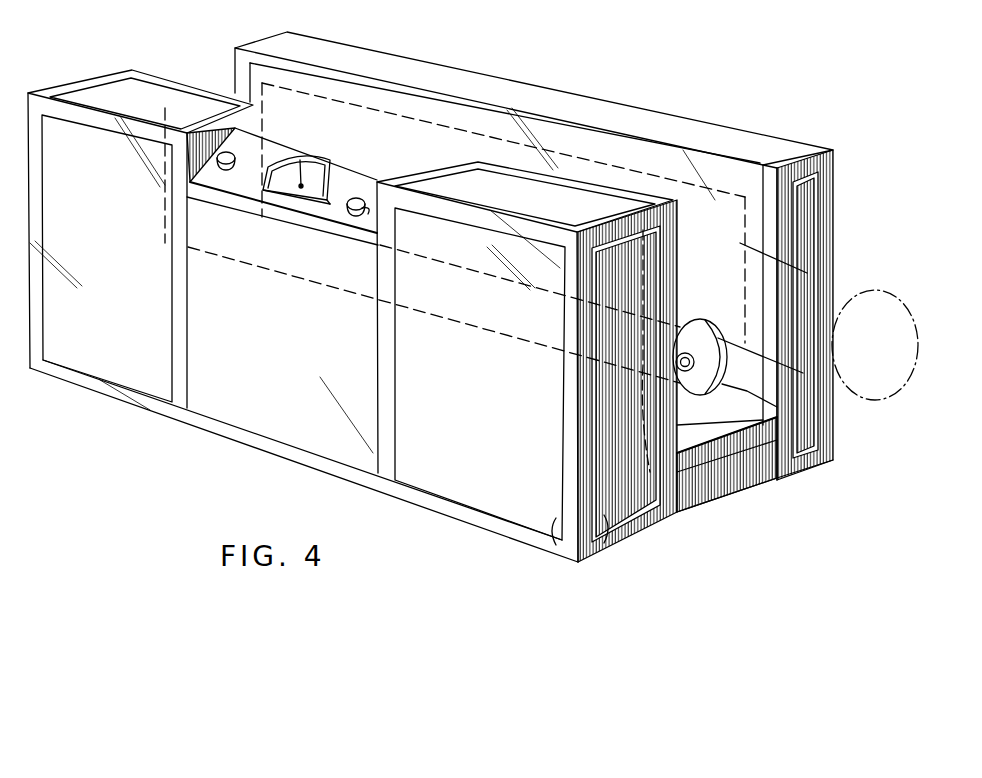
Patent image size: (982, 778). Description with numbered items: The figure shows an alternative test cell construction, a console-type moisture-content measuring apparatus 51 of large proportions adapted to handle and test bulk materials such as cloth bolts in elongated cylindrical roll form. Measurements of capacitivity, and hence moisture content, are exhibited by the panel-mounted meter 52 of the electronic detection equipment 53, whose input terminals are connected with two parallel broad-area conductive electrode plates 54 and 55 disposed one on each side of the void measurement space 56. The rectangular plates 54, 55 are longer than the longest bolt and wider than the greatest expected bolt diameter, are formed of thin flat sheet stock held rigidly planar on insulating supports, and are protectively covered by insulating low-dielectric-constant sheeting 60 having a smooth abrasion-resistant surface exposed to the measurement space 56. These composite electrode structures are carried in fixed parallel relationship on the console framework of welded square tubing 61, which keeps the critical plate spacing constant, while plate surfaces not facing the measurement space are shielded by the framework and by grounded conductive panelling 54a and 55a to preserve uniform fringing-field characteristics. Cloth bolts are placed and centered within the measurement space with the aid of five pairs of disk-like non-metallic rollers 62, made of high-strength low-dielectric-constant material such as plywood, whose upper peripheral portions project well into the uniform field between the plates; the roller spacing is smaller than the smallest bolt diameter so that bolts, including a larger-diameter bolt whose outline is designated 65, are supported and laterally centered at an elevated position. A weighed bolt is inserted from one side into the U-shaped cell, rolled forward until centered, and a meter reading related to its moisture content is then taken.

The apparatus 51 is at (722, 76).
The panel-mounted meter 52 is at (313, 188).
The electronic detection equipment 53 is at (246, 188).
The conductive electrode plate 54 is at (655, 505).
The grounded conductive panelling 54a is at (606, 518).
The conductive electrode plate 55 is at (730, 195).
The grounded conductive panelling 55a is at (900, 186).
The void measurement space 56 is at (568, 156).
The insulating low-dielectric-constant sheeting 60 is at (758, 258).
The console framework of welded square tubing 61 is at (775, 468).
The disk-like non-metallic rollers 62 is at (695, 358).
The outline of larger-diameter bolt 65 is at (860, 291).